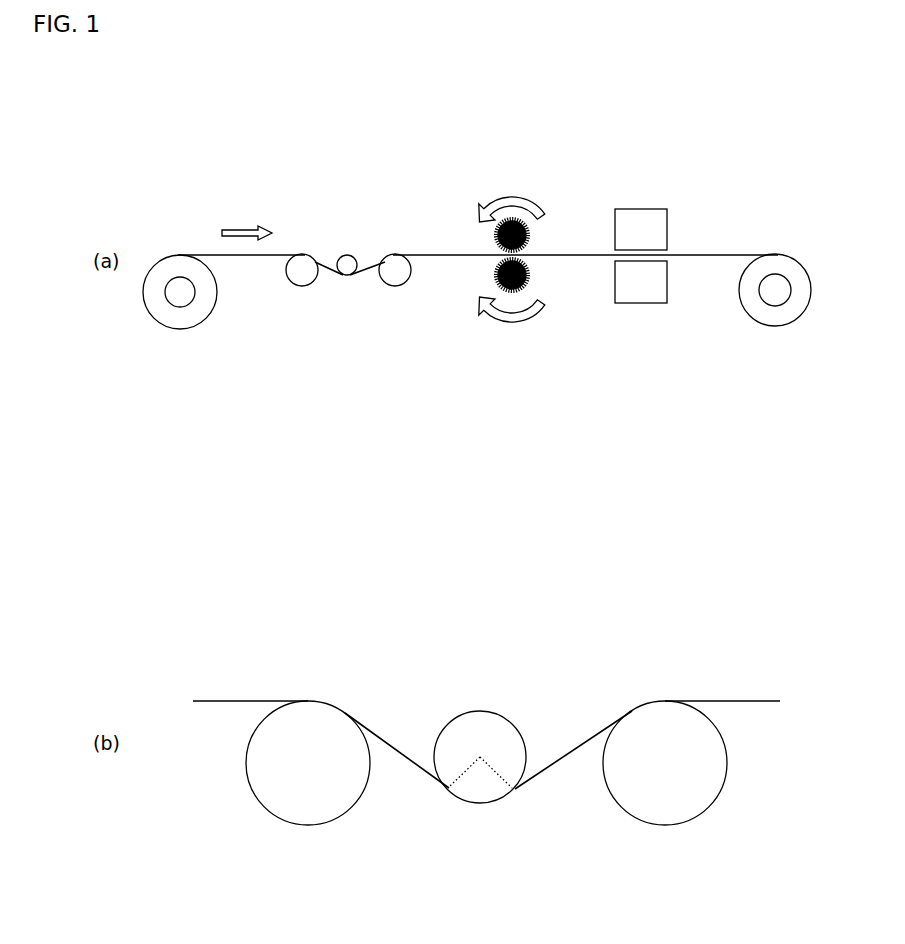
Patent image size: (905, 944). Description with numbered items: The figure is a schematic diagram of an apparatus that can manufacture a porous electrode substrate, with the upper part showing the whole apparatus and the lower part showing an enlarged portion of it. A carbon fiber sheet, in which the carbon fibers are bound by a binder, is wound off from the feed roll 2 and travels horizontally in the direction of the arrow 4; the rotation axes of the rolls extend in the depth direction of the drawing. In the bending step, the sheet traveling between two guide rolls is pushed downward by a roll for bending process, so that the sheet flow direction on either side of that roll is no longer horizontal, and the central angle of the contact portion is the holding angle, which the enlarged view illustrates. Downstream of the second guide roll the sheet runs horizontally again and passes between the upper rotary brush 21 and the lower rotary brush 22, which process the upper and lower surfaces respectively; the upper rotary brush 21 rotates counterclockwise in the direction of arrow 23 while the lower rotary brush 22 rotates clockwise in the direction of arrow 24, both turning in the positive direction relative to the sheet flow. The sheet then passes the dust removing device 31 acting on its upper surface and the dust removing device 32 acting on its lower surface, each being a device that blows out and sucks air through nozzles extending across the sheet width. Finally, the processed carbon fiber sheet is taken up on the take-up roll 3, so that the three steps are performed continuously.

The feed roll 2 is at (180, 303).
The take-up roll 3 is at (775, 300).
The arrow 4 is at (261, 223).
The upper rotary brush 21 is at (512, 218).
The lower rotary brush 22 is at (513, 295).
The arrow 23 is at (533, 197).
The arrow 24 is at (533, 323).
The dust removing device 31 is at (643, 218).
The dust removing device 32 is at (645, 287).